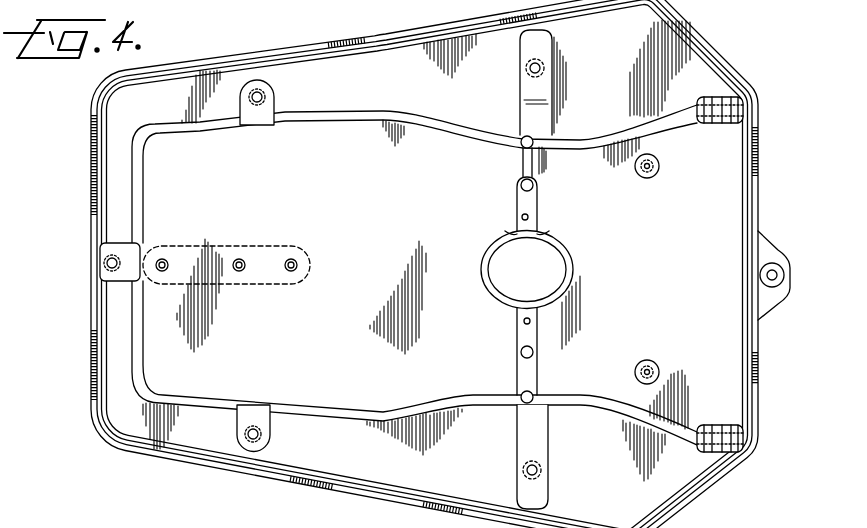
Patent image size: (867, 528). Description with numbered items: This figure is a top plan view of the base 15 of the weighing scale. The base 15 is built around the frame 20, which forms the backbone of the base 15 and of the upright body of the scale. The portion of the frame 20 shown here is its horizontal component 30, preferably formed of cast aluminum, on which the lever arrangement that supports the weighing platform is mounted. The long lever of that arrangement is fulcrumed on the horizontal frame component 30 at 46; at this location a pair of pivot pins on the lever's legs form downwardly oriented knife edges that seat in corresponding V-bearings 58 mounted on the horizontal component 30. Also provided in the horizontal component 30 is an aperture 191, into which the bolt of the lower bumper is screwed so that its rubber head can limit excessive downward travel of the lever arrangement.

The horizontal base 15 is at (86, 412).
The frame 20 is at (147, 462).
The horizontal component 30 is at (317, 76).
The fulcrum 46 is at (720, 92).
The V-bearings 58 is at (727, 122).
The aperture 191 is at (239, 262).